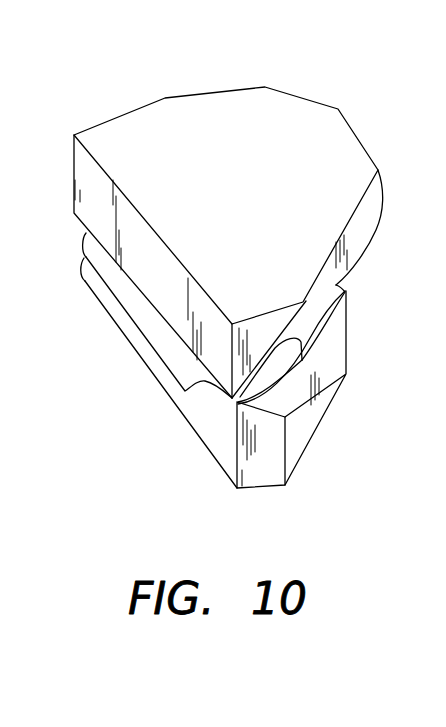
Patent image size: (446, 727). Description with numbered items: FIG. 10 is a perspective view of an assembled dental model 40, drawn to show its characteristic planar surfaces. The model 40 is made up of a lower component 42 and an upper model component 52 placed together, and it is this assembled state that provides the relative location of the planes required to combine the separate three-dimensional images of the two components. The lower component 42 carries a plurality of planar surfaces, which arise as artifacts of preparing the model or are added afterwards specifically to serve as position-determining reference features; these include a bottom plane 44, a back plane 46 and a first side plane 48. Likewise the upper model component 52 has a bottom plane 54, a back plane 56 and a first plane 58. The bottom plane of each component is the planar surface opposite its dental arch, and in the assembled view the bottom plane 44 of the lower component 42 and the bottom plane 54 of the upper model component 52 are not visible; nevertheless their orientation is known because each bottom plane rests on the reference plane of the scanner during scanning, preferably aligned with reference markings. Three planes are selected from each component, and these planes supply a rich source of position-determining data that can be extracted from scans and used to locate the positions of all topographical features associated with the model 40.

The model 40 is at (242, 280).
The lower component 42 is at (245, 406).
The bottom plane 44 is at (258, 488).
The back plane 46 is at (166, 383).
The first side plane 48 is at (300, 430).
The upper model component 52 is at (239, 202).
The bottom plane 54 is at (232, 112).
The back plane 56 is at (83, 180).
The first plane 58 is at (340, 284).